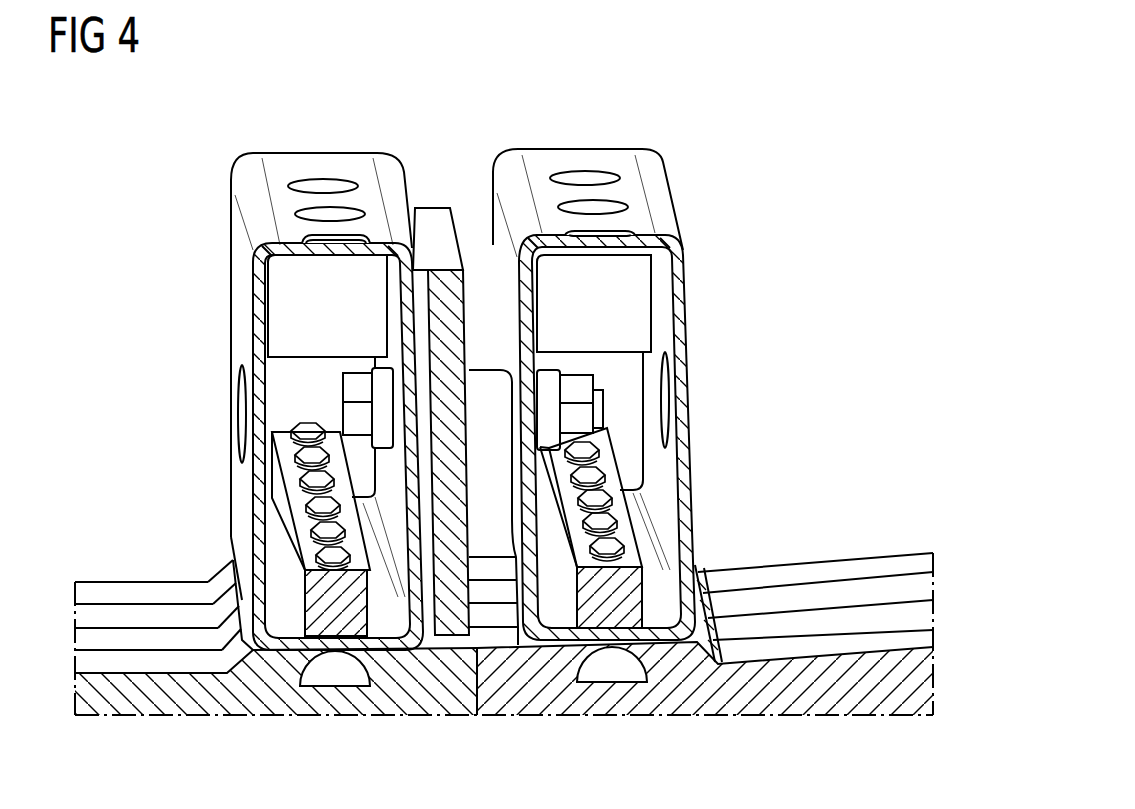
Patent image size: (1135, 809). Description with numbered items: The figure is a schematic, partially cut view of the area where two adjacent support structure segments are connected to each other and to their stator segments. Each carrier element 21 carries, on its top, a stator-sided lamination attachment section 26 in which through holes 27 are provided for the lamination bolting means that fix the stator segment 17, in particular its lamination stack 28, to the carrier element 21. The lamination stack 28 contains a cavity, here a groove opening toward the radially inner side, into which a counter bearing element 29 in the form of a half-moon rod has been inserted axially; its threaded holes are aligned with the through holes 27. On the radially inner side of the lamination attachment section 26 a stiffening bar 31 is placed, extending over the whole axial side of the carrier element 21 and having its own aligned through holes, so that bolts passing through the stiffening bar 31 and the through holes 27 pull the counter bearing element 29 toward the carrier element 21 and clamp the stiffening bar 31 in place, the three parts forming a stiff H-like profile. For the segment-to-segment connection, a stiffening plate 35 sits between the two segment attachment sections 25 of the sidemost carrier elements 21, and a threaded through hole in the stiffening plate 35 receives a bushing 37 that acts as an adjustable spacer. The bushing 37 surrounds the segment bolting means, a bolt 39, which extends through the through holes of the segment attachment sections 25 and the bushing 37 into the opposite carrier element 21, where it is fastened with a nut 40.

The stator segment 17 is at (175, 713).
The carrier element 21 is at (247, 170).
The segment attachment section 25 is at (415, 330).
The lamination attachment section 26 is at (367, 158).
The through holes 27 is at (320, 213).
The lamination stack 28 is at (410, 705).
The counter bearing element 29 is at (330, 672).
The stiffening bar 31 is at (314, 620).
The stiffening plate 35 is at (433, 220).
The bushing 37 is at (480, 385).
The bolt 39 is at (360, 415).
The nut 40 is at (577, 387).